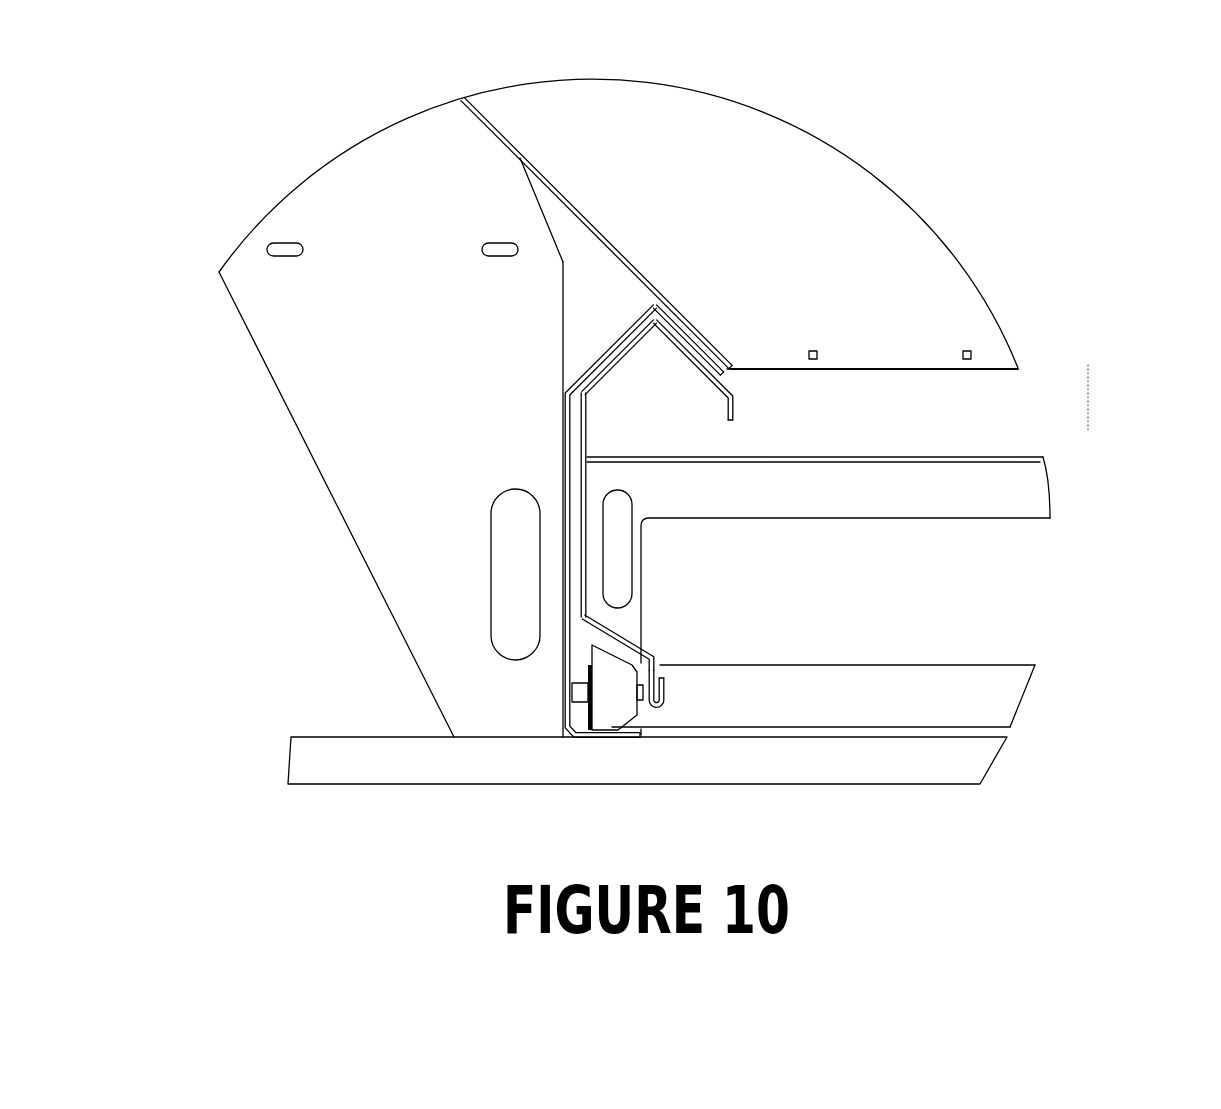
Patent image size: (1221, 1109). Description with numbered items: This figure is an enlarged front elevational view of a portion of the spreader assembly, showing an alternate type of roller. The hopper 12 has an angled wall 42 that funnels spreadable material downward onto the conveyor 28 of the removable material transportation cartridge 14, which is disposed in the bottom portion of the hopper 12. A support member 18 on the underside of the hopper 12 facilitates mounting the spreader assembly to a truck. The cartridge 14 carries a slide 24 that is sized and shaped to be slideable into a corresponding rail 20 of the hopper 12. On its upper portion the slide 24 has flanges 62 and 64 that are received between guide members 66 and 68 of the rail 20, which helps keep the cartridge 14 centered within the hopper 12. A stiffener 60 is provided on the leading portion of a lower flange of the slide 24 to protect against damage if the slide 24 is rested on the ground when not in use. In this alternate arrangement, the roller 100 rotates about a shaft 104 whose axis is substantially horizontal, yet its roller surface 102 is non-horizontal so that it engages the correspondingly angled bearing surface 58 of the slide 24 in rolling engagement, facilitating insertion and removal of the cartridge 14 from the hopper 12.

The hopper 12 is at (823, 141).
The removable material transportation cartridge 14 is at (1090, 378).
The support member 18 is at (992, 767).
The rail 20 is at (561, 428).
The slide 24 is at (589, 430).
The conveyor 28 is at (808, 454).
The angled wall 42 is at (549, 176).
The bearing surface 58 is at (588, 635).
The stiffener 60 is at (667, 687).
The flange 62 is at (612, 370).
The flange 64 is at (703, 377).
The guide member 66 is at (613, 338).
The guide member 68 is at (686, 318).
The roller 100 is at (643, 705).
The roller surface 102 is at (631, 661).
The shaft 104 is at (576, 703).